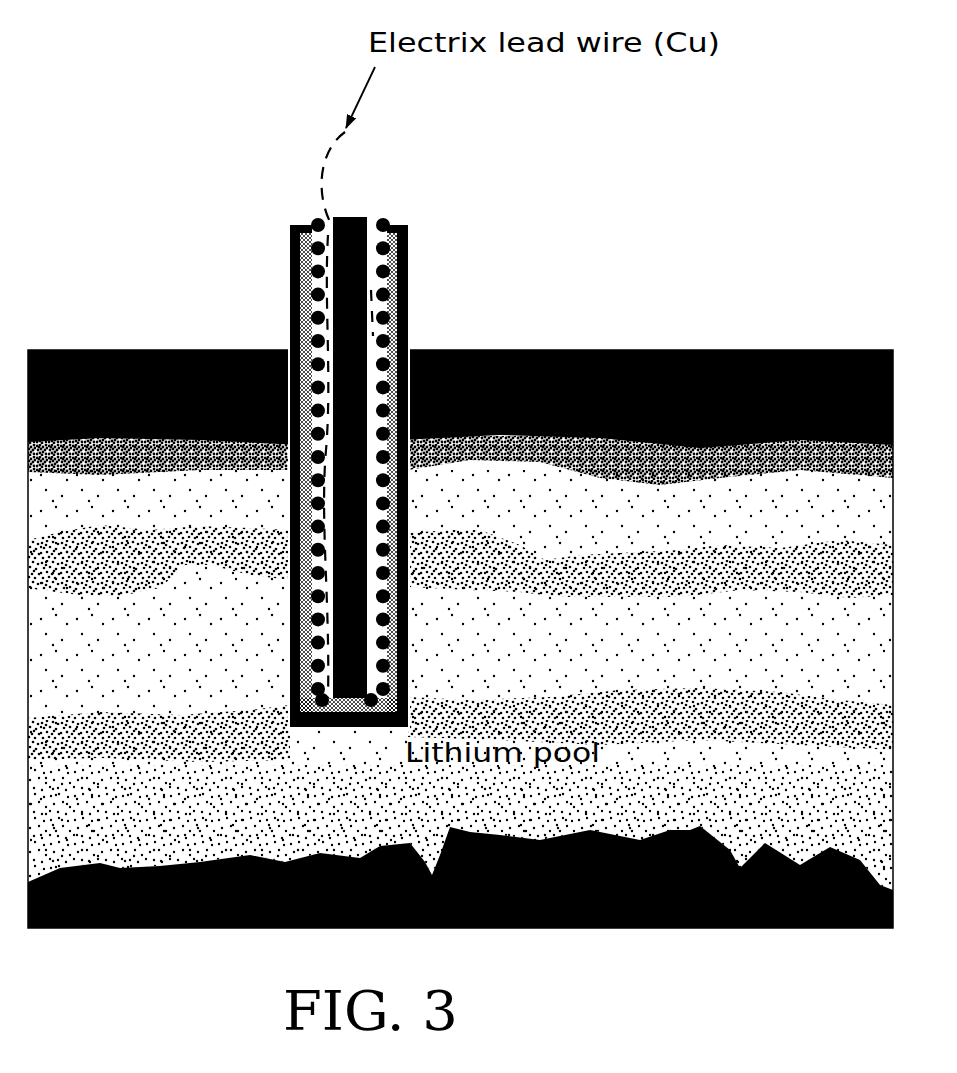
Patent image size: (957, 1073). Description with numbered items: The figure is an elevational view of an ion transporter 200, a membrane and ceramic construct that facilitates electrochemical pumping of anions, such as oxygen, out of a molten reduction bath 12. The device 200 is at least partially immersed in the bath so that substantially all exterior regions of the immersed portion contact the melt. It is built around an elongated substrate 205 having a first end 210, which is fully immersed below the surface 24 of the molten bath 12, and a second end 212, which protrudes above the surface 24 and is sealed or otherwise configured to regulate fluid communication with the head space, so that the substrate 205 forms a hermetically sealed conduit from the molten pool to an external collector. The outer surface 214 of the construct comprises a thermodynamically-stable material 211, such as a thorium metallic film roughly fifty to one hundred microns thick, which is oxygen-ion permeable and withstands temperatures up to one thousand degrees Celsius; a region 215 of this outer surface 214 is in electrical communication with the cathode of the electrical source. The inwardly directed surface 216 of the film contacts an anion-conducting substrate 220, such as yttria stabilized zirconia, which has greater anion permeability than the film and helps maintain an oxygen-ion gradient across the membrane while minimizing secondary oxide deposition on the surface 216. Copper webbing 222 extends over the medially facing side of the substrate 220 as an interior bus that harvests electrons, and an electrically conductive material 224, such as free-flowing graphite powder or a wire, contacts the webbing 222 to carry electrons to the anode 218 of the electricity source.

The molten reduction bath 12 is at (697, 651).
The surface of the molten bath 24 is at (165, 350).
The ion transporter 200 is at (343, 438).
The elongated substrate 205 is at (290, 330).
The first end 210 is at (312, 728).
The thermodynamically-stable material 211 is at (370, 481).
The second end 212 is at (410, 228).
The outer surface 214 is at (290, 570).
The region of the outer surface 215 is at (290, 268).
The inwardly directed surface 216 is at (290, 633).
The anode 218 is at (318, 157).
The anion-conducting substrate 220 is at (411, 344).
The copper webbing 222 is at (408, 608).
The electrically conductive material 224 is at (353, 213).